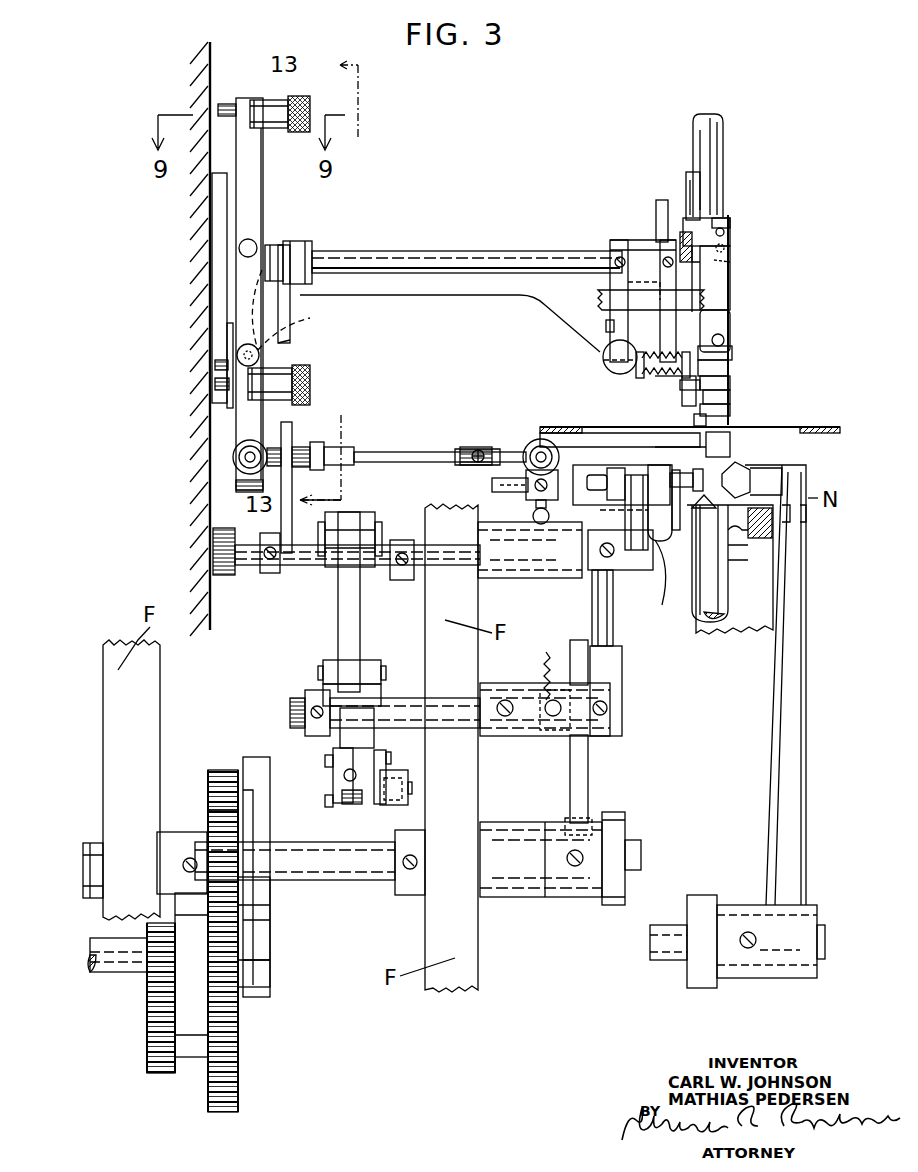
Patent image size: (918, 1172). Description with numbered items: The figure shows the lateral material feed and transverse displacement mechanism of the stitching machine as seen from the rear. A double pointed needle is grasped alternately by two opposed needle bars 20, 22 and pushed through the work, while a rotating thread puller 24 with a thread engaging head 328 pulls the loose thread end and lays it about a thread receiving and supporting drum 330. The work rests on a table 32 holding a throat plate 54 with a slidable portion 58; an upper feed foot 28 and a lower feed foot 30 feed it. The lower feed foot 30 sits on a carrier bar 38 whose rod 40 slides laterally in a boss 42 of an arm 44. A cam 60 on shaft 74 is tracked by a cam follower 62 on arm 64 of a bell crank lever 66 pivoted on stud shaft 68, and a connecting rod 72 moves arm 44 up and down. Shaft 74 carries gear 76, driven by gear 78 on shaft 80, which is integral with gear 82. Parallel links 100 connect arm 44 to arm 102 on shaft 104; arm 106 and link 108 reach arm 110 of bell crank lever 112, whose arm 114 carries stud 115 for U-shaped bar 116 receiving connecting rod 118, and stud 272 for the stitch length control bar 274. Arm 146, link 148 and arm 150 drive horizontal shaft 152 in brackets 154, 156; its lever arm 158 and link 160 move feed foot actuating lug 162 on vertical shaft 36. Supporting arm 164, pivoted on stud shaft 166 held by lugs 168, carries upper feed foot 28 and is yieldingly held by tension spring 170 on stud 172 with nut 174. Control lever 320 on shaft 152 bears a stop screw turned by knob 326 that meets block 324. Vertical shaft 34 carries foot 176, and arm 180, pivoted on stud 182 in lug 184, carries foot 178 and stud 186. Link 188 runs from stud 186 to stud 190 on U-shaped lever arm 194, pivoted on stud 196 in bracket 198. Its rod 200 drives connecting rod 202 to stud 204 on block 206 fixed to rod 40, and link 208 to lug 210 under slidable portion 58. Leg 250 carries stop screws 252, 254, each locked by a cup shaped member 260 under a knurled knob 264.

The needle bar 20 is at (712, 140).
The needle bar 22 is at (705, 605).
The rotating thread puller 24 is at (790, 715).
The upper feed foot 28 is at (730, 410).
The lower feed foot 30 is at (730, 445).
The work support table 32 is at (815, 425).
The vertical reciprocatory shaft 34 is at (688, 180).
The vertical reciprocatory shaft 36 is at (695, 200).
The carrier bar 38 is at (728, 538).
The rod 40 is at (495, 485).
The laterally projecting lug or boss 42 is at (590, 520).
The arm 44 is at (598, 560).
The throat plate 54 is at (810, 418).
The slidable portion of throat plate 58 is at (780, 430).
The cam 60 is at (608, 890).
The cam follower 62 is at (615, 812).
The arm of bell crank lever 64 is at (582, 778).
The bell crank lever 66 is at (560, 750).
The stud shaft 68 is at (302, 712).
The connecting rod 72 is at (605, 640).
The shaft 74 is at (345, 870).
The gear 76 is at (215, 792).
The gear 78 is at (228, 1092).
The shaft 80 is at (125, 955).
The gear 82 is at (162, 1048).
The parallel links 100 is at (665, 475).
The arm 102 is at (630, 540).
The shaft 104 is at (650, 545).
The arm 106 is at (338, 568).
The link 108 is at (350, 612).
The arm of bell crank lever 110 is at (330, 678).
The bell crank lever 112 is at (314, 742).
The arm of bell crank lever 114 is at (335, 770).
The stud 115 is at (322, 760).
The U-shaped lug or bar 116 is at (352, 757).
The connecting rod 118 is at (352, 804).
The arm 146 is at (270, 575).
The link 148 is at (290, 300).
The arm 150 is at (305, 255).
The horizontal shaft 152 is at (398, 262).
The bearing bracket 154 is at (222, 230).
The bearing bracket 156 is at (640, 258).
The lever arm 158 is at (662, 252).
The link 160 is at (732, 352).
The feed foot actuating lug 162 is at (700, 222).
The feed foot supporting arm 164 is at (726, 221).
The stud shaft 166 is at (725, 232).
The lugs 168 is at (705, 255).
The tension spring 170 is at (680, 392).
The stud 172 is at (642, 362).
The adjustable nut 174 is at (636, 372).
The foot 176 is at (694, 420).
The foot 178 is at (730, 396).
The arm 180 is at (730, 320).
The stud 182 is at (728, 248).
The lug 184 is at (730, 262).
The stud 186 is at (725, 340).
The link 188 is at (458, 282).
The stud 190 is at (262, 358).
The U-shaped lever arm 194 is at (226, 502).
The stud 196 is at (252, 246).
The bracket 198 is at (300, 270).
The shaft or rod 200 is at (246, 458).
The connecting rod 202 is at (328, 452).
The stud 204 is at (536, 452).
The lug or block 206 is at (530, 490).
The link 208 is at (382, 460).
The lug or bar 210 is at (475, 446).
The leg of U-shaped lever arm 250 is at (248, 193).
The adjustable stop screw 252 is at (228, 103).
The adjustable stop screw 254 is at (225, 388).
The slotted cup shaped member 260 is at (282, 95).
The knurled knob 264 is at (320, 92).
The stud 272 is at (325, 802).
The stitch length control bar 274 is at (395, 790).
The control lever 320 is at (622, 275).
The block 324 is at (606, 326).
The knob 326 is at (612, 352).
The thread engaging head 328 is at (750, 480).
The thread receiving and supporting drum 330 is at (752, 630).